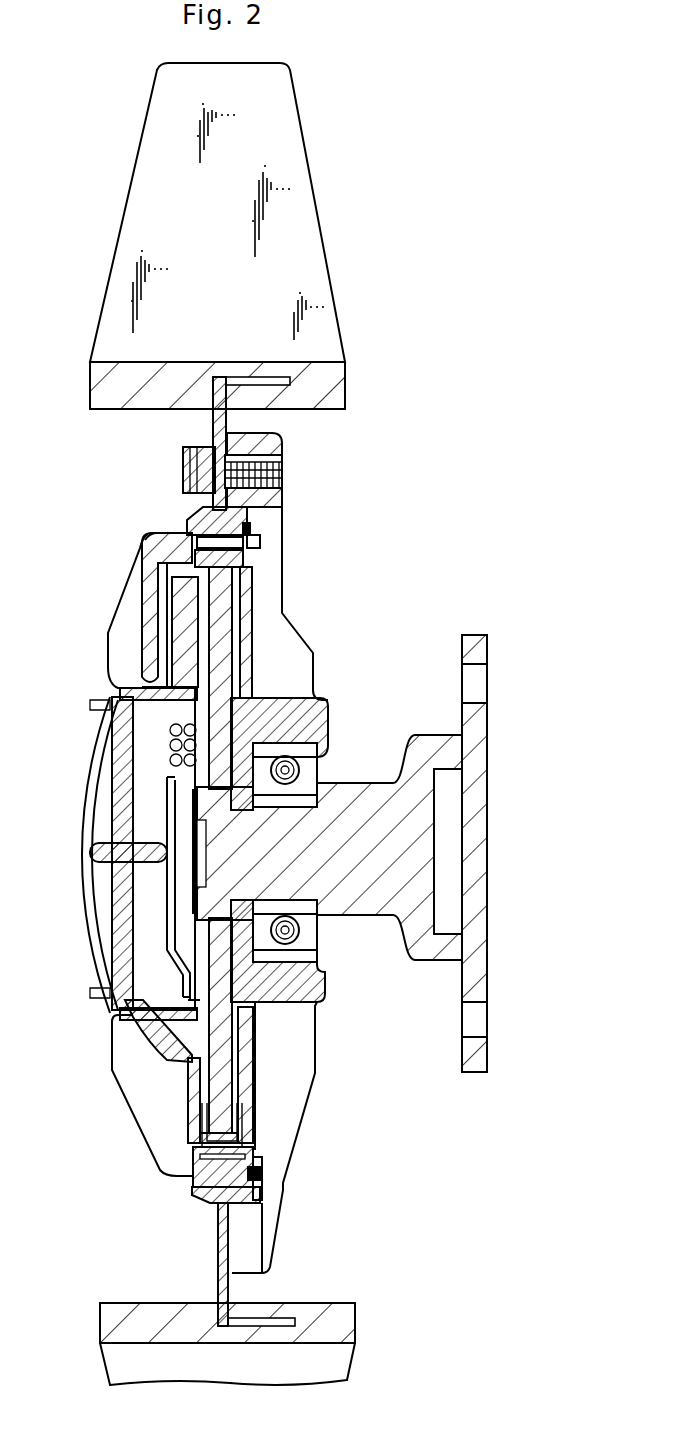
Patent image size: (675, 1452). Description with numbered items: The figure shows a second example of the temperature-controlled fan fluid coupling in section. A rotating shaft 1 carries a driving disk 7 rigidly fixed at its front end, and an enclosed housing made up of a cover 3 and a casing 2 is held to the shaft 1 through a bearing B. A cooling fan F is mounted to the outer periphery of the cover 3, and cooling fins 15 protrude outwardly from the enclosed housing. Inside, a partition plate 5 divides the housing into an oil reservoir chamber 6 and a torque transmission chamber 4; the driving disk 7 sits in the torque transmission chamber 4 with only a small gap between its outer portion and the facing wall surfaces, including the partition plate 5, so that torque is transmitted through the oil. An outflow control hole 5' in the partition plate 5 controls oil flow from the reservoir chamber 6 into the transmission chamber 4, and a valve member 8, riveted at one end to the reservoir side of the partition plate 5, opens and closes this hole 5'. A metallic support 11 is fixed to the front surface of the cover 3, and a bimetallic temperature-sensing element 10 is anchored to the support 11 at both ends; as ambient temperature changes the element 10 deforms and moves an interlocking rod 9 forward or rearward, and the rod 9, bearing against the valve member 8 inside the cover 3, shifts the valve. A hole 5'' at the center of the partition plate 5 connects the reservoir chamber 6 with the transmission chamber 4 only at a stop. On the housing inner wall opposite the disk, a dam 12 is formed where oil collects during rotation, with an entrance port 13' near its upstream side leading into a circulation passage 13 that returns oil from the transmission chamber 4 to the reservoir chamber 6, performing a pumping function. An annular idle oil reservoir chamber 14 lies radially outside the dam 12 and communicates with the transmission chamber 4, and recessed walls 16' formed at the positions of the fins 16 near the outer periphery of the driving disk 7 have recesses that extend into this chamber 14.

The cooling fan F is at (300, 247).
The rotating shaft 1 is at (424, 866).
The casing 2 is at (308, 730).
The cover 3 is at (157, 1030).
The torque transmission chamber 4 is at (232, 682).
The partition plate 5 is at (124, 825).
The outflow control hole 5' is at (116, 991).
The hole 5'' is at (111, 851).
The oil reservoir chamber 6 is at (143, 730).
The driving disk 7 is at (220, 650).
The valve member 8 is at (165, 910).
The interlocking rod 9 is at (96, 852).
The temperature-sensing element 10 is at (88, 767).
The metallic support 11 is at (118, 948).
The dam 12 is at (240, 563).
The circulation passage 13 is at (122, 616).
The entrance port 13' is at (147, 508).
The annular idle oil reservoir chamber 14 is at (253, 543).
The cooling fins 15 is at (267, 610).
The fins 16 is at (274, 1125).
The recessed walls 16' is at (213, 859).
The bearing B is at (292, 934).